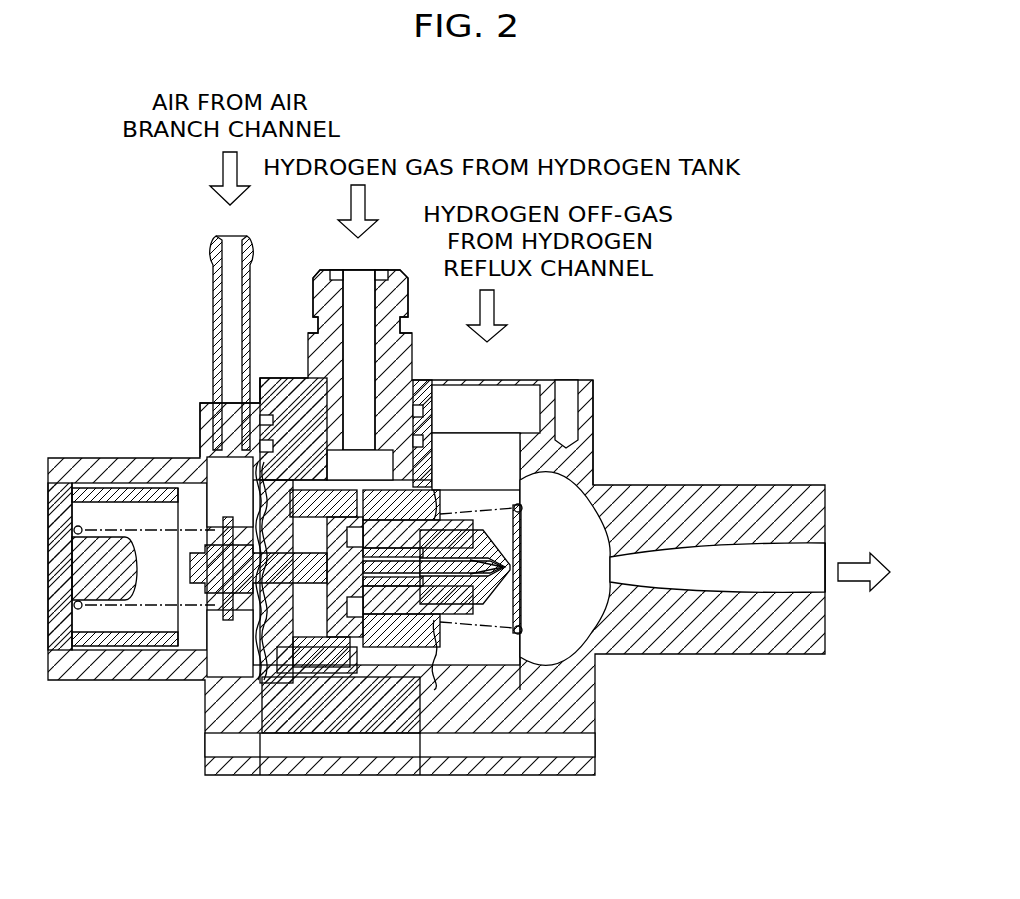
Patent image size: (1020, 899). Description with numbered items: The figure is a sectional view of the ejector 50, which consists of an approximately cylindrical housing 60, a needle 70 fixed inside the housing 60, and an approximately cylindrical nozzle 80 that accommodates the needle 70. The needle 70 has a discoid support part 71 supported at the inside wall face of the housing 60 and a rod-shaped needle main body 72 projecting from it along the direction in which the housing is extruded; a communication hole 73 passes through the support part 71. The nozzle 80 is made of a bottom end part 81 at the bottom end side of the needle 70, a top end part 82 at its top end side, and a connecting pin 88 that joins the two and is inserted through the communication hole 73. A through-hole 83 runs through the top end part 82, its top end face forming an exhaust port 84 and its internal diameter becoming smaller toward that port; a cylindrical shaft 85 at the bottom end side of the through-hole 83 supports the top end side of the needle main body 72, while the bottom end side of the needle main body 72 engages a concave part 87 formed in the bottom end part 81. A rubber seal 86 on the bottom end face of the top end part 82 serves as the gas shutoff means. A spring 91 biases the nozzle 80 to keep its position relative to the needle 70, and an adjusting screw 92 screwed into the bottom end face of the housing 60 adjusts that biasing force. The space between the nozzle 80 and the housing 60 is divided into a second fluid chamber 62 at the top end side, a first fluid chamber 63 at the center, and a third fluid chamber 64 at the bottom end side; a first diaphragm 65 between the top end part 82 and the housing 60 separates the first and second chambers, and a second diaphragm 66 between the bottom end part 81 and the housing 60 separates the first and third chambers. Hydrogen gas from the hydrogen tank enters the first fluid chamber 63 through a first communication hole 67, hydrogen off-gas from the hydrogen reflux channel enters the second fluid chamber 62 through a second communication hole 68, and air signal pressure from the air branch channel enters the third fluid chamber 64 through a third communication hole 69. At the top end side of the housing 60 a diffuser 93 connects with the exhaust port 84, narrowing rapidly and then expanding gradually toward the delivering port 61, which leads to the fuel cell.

The ejector 50 is at (708, 268).
The housing 60 is at (585, 394).
The delivering port 61 is at (840, 550).
The second fluid chamber 62 is at (494, 490).
The first fluid chamber 63 is at (378, 470).
The third fluid chamber 64 is at (232, 497).
The first diaphragm 65 is at (455, 470).
The second diaphragm 66 is at (232, 405).
The first communication hole 67 is at (372, 300).
The second communication hole 68 is at (530, 400).
The third communication hole 69 is at (228, 262).
The needle 70 is at (300, 622).
The support part 71 is at (337, 625).
The needle main body 72 is at (475, 622).
The communication hole 73 is at (322, 485).
The nozzle 80 is at (455, 660).
The bottom end part 81 is at (205, 548).
The top end part 82 is at (524, 503).
The through-hole 83 is at (458, 496).
The exhaust port 84 is at (665, 556).
The shaft 85 is at (400, 622).
The rubber seal 86 is at (365, 622).
The concave part 87 is at (212, 592).
The connecting pin 88 is at (285, 440).
The spring 91 is at (80, 612).
The adjusting screw 92 is at (62, 585).
The diffuser 93 is at (458, 648).